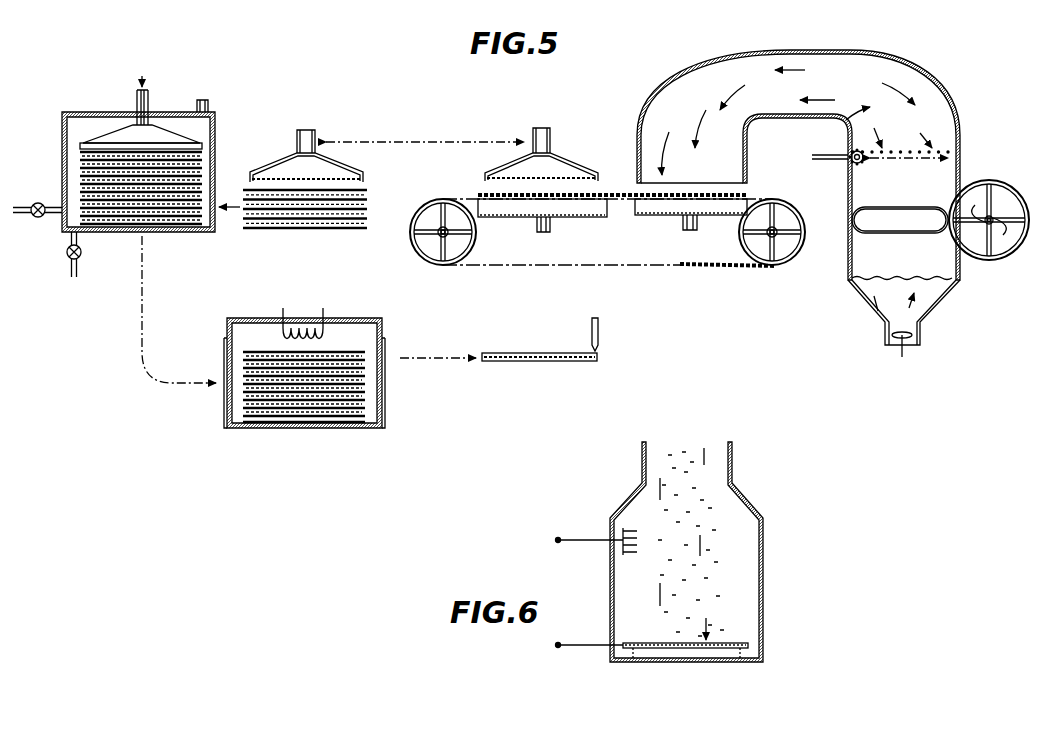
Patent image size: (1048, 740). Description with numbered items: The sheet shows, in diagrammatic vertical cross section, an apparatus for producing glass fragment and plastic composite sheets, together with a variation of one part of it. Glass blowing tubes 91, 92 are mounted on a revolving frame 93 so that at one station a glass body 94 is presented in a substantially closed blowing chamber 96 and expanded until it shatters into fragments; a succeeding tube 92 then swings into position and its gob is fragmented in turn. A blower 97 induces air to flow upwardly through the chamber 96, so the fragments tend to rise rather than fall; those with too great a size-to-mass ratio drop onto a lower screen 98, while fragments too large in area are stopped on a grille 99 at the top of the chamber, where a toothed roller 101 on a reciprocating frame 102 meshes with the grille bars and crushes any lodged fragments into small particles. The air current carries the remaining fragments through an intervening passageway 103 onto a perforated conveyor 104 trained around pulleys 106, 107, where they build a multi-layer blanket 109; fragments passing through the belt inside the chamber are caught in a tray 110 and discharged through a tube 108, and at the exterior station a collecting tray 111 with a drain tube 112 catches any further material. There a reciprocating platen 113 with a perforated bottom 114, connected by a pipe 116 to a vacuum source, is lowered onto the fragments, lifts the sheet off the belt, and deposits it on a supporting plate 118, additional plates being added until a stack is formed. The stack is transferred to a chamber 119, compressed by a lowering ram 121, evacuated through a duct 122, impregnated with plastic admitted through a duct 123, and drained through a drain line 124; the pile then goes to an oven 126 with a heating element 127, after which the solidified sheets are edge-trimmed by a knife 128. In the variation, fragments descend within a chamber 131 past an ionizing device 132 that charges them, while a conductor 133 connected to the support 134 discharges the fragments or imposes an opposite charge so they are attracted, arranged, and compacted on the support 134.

In FIG. 5, the glass blowing tube 91 is at (990, 184).
In FIG. 5, the glass blowing tube 92 is at (994, 200).
In FIG. 5, the revolving frame 93 is at (998, 244).
In FIG. 5, the glass body 94 is at (931, 197).
In FIG. 5, the blowing chamber 96 is at (912, 262).
In FIG. 5, the blower 97 is at (908, 327).
In FIG. 5, the lower screen 98 is at (945, 280).
In FIG. 5, the grille 99 is at (936, 150).
In FIG. 5, the toothed roller 101 is at (860, 165).
In FIG. 5, the reciprocating frame 102 is at (831, 163).
In FIG. 5, the intervening passageway 103 is at (818, 103).
In FIG. 5, the perforated conveyor 104 is at (719, 271).
In FIG. 5, the pulley 106 is at (470, 240).
In FIG. 5, the pulley 107 is at (746, 246).
In FIG. 5, the tube 108 is at (698, 226).
In FIG. 5, the multi-layer blanket 109 is at (626, 192).
In FIG. 5, the tray 110 is at (663, 217).
In FIG. 5, the collecting tray 111 is at (585, 219).
In FIG. 5, the drain tube 112 is at (546, 232).
In FIG. 5, the reciprocating platen 113 is at (341, 170).
In FIG. 5, the perforated bottom 114 is at (272, 180).
In FIG. 5, the pipe 116 is at (306, 134).
In FIG. 5, the supporting plate 118 is at (366, 198).
In FIG. 5, the chamber 119 is at (209, 114).
In FIG. 5, the lowering ram 121 is at (103, 140).
In FIG. 5, the duct 122 is at (215, 78).
In FIG. 5, the duct 123 is at (47, 207).
In FIG. 5, the drain line 124 is at (68, 244).
In FIG. 5, the oven 126 is at (377, 332).
In FIG. 5, the heating element 127 is at (325, 332).
In FIG. 5, the knife 128 is at (598, 341).
In FIG. 6, the chamber 131 is at (750, 559).
In FIG. 6, the ionizing device 132 is at (622, 532).
In FIG. 6, the conductor 133 is at (578, 655).
In FIG. 6, the support 134 is at (672, 655).